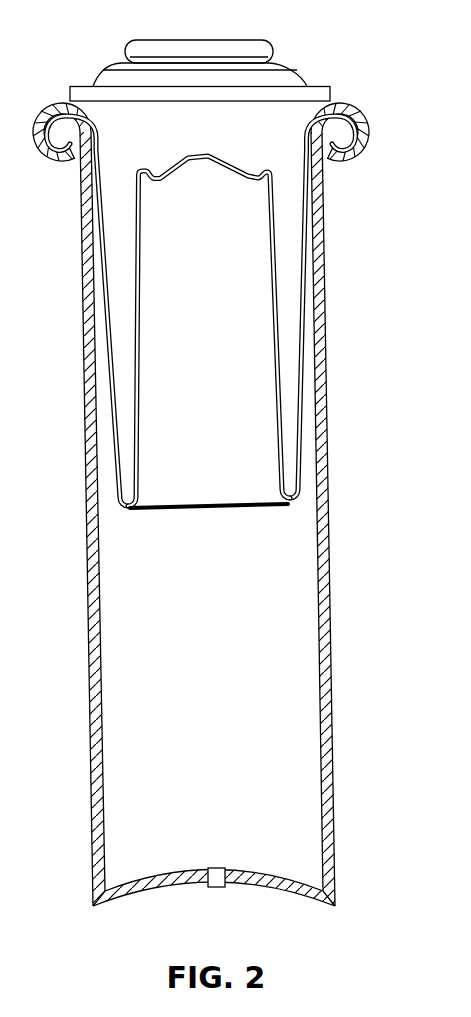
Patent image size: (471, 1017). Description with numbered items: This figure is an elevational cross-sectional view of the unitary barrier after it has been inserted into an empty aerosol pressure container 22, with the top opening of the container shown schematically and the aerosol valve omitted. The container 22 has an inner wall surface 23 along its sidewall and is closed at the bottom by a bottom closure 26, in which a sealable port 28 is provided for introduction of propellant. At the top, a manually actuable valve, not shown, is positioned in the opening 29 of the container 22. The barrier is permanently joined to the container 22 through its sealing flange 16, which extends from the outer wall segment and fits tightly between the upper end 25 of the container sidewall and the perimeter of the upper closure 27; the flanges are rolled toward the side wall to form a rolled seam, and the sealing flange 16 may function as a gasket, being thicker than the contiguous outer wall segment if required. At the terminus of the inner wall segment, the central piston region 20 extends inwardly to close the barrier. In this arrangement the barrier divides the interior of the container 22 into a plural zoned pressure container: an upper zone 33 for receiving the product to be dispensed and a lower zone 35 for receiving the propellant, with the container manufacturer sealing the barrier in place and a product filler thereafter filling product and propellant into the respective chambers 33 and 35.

The sealing flange 16 is at (98, 128).
The central piston region 20 is at (182, 154).
The valved pressure container 22 is at (216, 499).
The inner wall surface 23 is at (321, 688).
The upper end of the sidewall 25 is at (350, 128).
The bottom closure 26 is at (273, 891).
The upper closure 27 is at (53, 106).
The sealable port 28 is at (213, 867).
The opening 29 is at (178, 48).
The upper zone 33 is at (234, 138).
The lower zone 35 is at (373, 103).